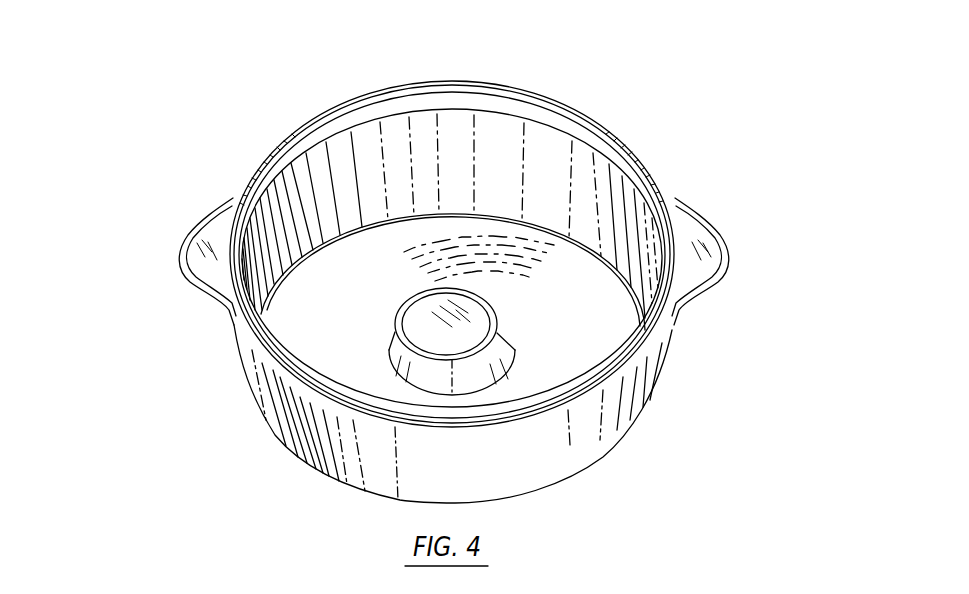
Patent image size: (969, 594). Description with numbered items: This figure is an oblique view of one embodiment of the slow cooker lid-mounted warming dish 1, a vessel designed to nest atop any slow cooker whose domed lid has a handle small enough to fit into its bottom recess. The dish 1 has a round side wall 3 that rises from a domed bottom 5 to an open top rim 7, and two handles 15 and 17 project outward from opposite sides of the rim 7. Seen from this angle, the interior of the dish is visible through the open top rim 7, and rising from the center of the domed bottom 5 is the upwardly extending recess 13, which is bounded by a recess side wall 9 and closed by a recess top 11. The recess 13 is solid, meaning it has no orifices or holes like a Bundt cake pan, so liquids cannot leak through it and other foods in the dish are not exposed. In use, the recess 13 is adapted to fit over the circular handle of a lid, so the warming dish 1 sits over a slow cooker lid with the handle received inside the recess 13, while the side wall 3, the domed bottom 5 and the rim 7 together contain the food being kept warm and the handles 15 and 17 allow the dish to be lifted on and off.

The slow cooker lid-mounted warming dish 1 is at (668, 133).
The round side wall 3 is at (582, 448).
The domed bottom 5 is at (303, 337).
The open top rim 7 is at (544, 98).
The recess side wall 9 is at (396, 343).
The recess top 11 is at (438, 311).
The recess 13 is at (518, 338).
The handle 15 is at (213, 232).
The handle 17 is at (685, 232).